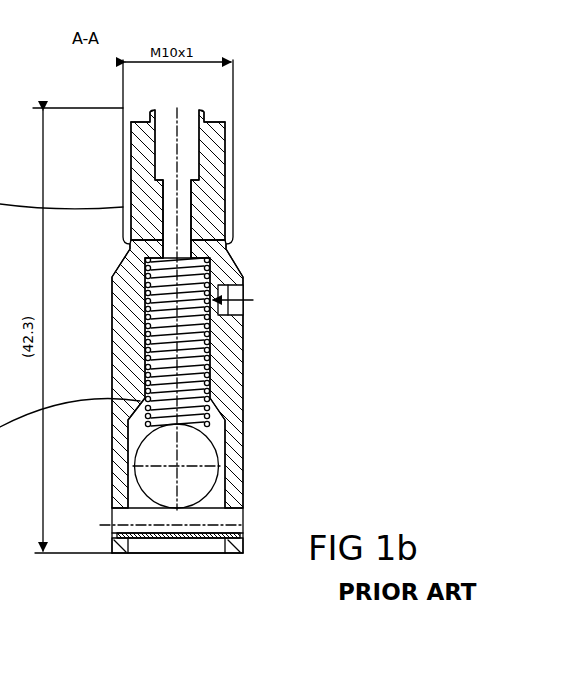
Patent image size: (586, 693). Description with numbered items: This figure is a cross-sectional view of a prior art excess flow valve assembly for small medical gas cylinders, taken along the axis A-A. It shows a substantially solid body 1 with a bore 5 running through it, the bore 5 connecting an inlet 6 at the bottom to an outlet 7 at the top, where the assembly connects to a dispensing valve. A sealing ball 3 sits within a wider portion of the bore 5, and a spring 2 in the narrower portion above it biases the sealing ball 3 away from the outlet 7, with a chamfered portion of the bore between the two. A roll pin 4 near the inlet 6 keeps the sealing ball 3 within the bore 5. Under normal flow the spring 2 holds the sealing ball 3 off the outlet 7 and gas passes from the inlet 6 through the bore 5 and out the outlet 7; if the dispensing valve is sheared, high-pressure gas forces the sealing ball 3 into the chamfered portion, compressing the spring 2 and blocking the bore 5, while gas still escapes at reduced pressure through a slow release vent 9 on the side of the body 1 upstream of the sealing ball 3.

The body 1 is at (256, 283).
The spring 2 is at (272, 299).
The sealing ball 3 is at (266, 425).
The roll pin 4 is at (254, 496).
The bore 5 is at (184, 213).
The inlet 6 is at (181, 554).
The outlet 7 is at (180, 109).
The slow release vent 9 is at (244, 289).